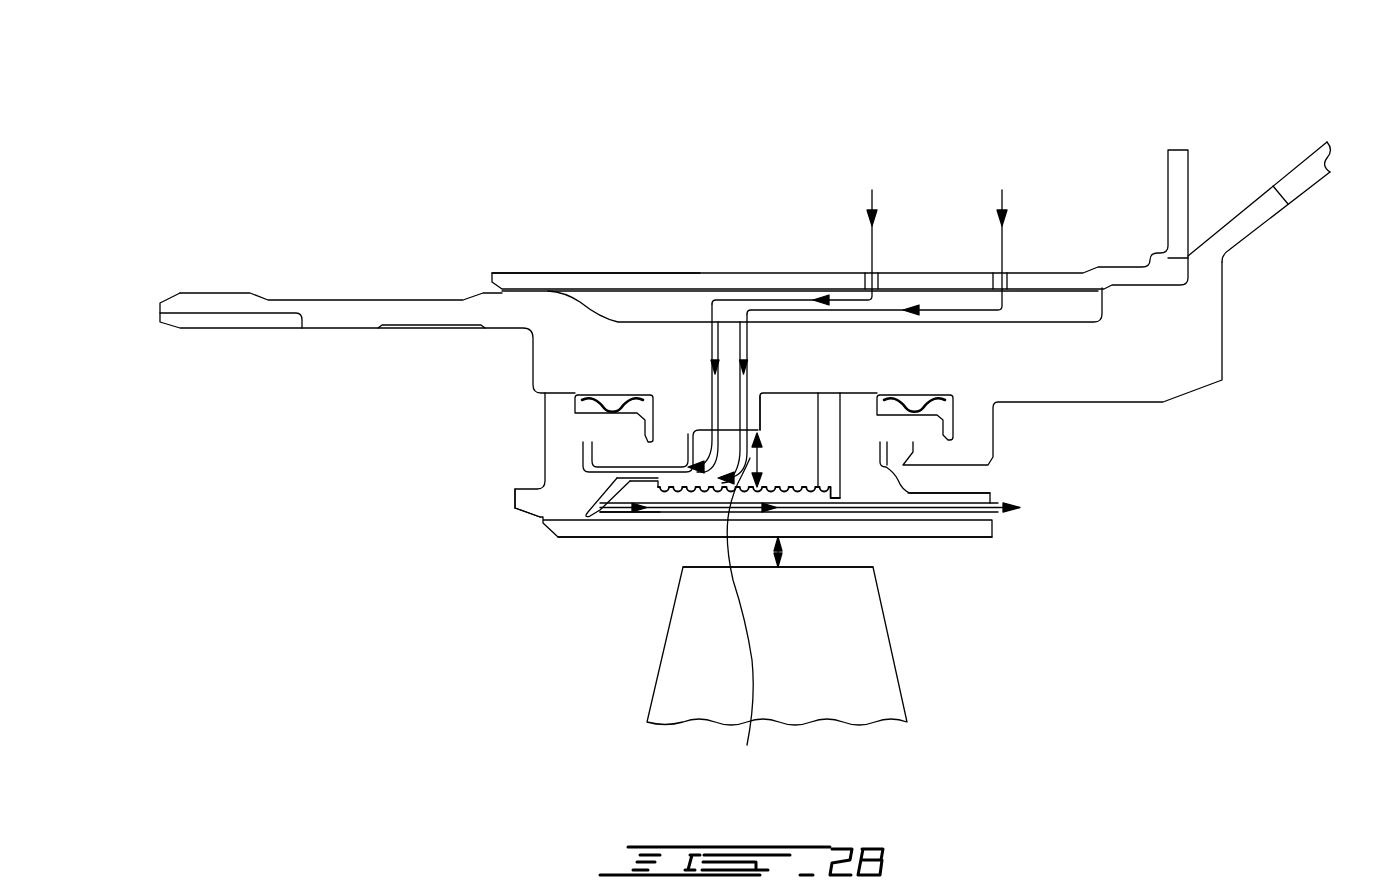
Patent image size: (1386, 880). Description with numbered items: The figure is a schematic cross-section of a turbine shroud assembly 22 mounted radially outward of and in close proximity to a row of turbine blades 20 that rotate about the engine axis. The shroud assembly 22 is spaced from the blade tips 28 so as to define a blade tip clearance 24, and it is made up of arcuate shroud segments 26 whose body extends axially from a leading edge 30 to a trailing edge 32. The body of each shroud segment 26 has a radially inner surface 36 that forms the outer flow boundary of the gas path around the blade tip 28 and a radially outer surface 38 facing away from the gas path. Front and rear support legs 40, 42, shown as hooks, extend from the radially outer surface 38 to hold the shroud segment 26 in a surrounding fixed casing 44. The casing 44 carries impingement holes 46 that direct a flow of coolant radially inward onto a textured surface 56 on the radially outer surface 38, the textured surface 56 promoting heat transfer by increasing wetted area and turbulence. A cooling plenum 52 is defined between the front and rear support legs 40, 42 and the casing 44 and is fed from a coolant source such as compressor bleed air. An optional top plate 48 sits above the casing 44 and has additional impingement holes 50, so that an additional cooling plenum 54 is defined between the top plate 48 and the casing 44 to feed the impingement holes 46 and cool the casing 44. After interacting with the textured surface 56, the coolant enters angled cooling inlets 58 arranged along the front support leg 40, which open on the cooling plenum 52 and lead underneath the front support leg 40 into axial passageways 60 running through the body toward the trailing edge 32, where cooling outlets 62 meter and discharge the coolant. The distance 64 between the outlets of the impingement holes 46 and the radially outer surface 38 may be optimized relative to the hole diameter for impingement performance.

The turbine blades 20 is at (863, 707).
The turbine shroud assembly 22 is at (212, 136).
The blade tip clearance 24 is at (782, 549).
The shroud segment 26 is at (480, 462).
The blade tip 28 is at (692, 566).
The leading edge 30 is at (492, 500).
The trailing edge 32 is at (1010, 494).
The radially inner surface 36 is at (580, 538).
The radially outer surface 38 is at (822, 488).
The front support leg 40 is at (557, 428).
The rear support leg 42 is at (857, 450).
The casing 44 is at (1177, 353).
The impingement holes 46 is at (707, 340).
The top plate 48 is at (1052, 283).
The additional impingement holes 50 is at (1000, 273).
The cooling plenum 52 is at (797, 406).
The additional cooling plenum 54 is at (618, 302).
The textured surface 56 is at (773, 456).
The cooling inlets 58 is at (613, 477).
The axial passageways 60 is at (660, 520).
The cooling outlets 62 is at (997, 513).
The distance 64 is at (743, 618).